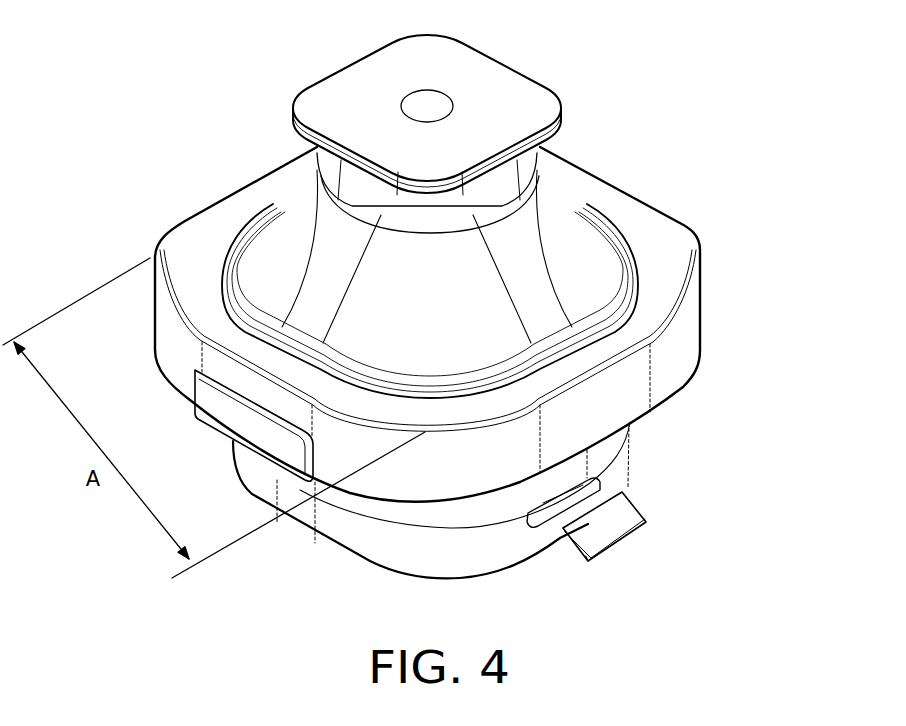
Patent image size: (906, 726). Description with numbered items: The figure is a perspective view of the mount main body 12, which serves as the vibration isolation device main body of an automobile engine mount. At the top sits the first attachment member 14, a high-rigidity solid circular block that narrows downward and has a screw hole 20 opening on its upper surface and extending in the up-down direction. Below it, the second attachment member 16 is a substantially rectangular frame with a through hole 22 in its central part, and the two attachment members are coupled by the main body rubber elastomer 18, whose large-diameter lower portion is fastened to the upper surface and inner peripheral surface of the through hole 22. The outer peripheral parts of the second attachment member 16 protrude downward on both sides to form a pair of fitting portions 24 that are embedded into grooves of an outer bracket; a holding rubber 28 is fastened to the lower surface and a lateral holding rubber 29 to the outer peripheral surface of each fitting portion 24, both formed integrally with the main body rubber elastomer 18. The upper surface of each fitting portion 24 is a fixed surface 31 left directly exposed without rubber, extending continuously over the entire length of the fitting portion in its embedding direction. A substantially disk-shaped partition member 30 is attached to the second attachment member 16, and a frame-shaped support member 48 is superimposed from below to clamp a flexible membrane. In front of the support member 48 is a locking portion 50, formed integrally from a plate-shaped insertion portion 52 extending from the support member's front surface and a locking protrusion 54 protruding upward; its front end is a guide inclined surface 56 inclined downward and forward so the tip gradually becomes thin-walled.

The mount main body 12 is at (645, 100).
The first attachment member 14 is at (512, 55).
The second attachment member 16 is at (368, 472).
The main body rubber elastomer 18 is at (290, 246).
The screw hole 20 is at (417, 120).
The through hole 22 is at (408, 388).
The fitting portion 24 is at (232, 372).
The holding rubber 28 is at (266, 478).
The lateral holding rubber 29 is at (240, 413).
The partition member 30 is at (483, 520).
The fixed surface 31 is at (638, 208).
The support member 48 is at (405, 548).
The locking portion 50 is at (558, 558).
The insertion portion 52 is at (598, 491).
The locking protrusion 54 is at (620, 503).
The guide inclined surface 56 is at (603, 530).